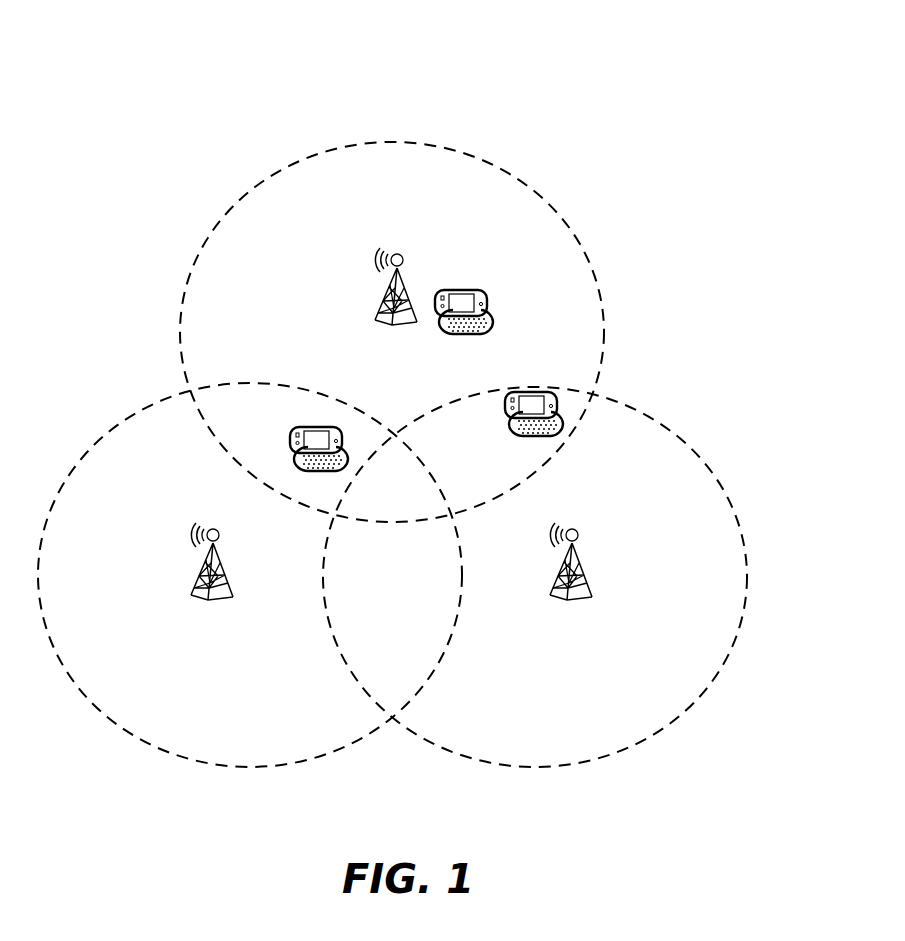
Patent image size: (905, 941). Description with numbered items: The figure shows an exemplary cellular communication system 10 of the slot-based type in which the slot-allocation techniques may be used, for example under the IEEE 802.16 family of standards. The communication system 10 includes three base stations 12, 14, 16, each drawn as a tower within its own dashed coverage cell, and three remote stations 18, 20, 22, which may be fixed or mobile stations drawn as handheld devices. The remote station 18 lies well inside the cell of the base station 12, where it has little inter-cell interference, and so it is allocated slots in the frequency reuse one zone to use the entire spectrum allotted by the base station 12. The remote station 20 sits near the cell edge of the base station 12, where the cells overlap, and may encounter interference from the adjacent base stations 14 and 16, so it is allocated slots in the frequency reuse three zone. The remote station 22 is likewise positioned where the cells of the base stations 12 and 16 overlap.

The communication system 10 is at (616, 129).
The base station 12 is at (383, 323).
The base station 14 is at (220, 598).
The base station 16 is at (565, 602).
The remote station 18 is at (470, 333).
The remote station 20 is at (328, 427).
The remote station 22 is at (545, 436).